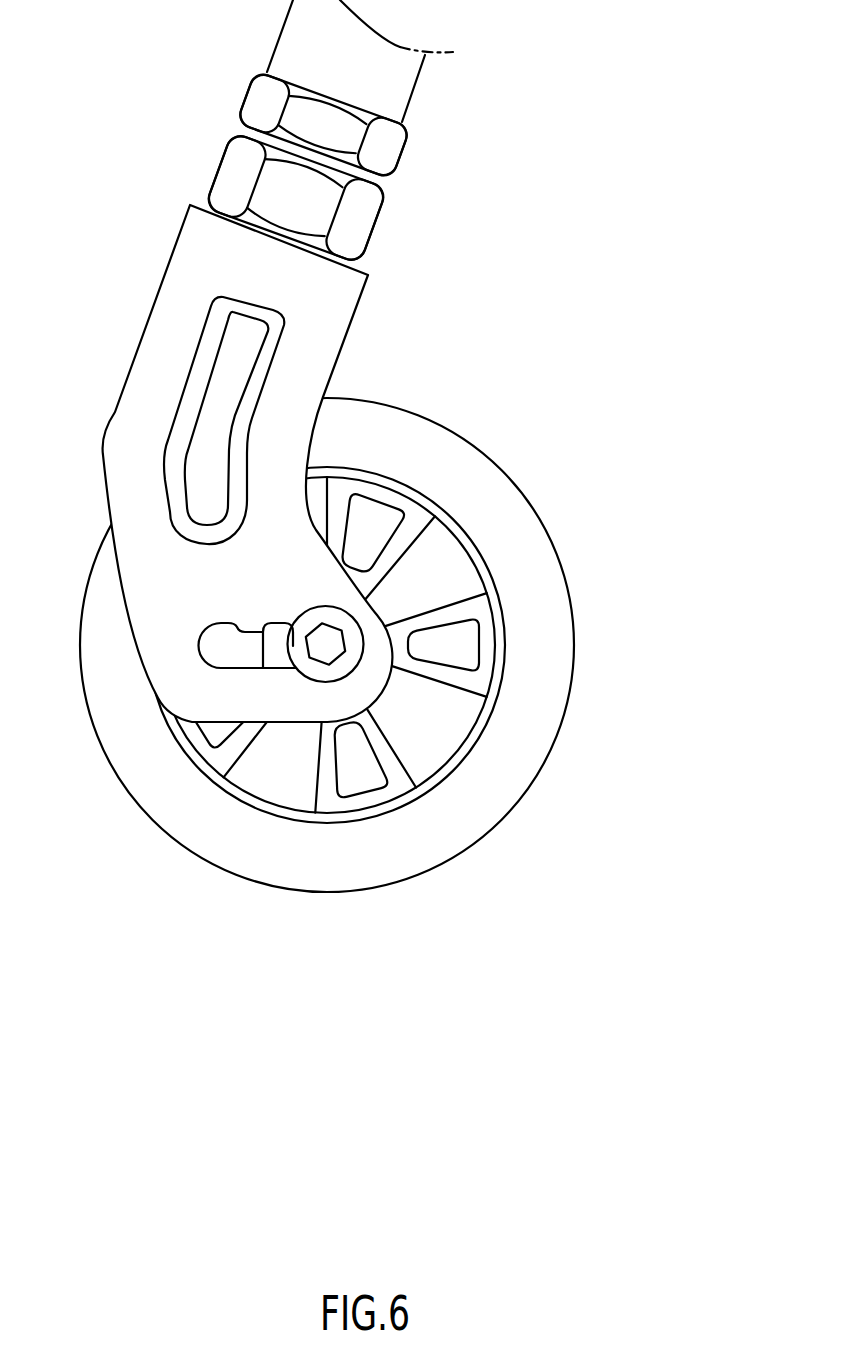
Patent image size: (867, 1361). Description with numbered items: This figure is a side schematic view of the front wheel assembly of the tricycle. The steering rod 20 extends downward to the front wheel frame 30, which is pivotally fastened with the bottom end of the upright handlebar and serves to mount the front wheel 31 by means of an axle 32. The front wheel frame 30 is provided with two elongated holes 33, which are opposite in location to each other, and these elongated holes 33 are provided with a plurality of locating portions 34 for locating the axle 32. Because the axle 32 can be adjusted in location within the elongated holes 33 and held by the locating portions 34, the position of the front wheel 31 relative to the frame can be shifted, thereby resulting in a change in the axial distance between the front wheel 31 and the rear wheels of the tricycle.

The steering rod 20 is at (392, 85).
The front wheel frame 30 is at (333, 315).
The front wheel 31 is at (465, 452).
The axle 32 is at (347, 629).
The elongated hole 33 is at (242, 669).
The locating portion 34 is at (215, 620).